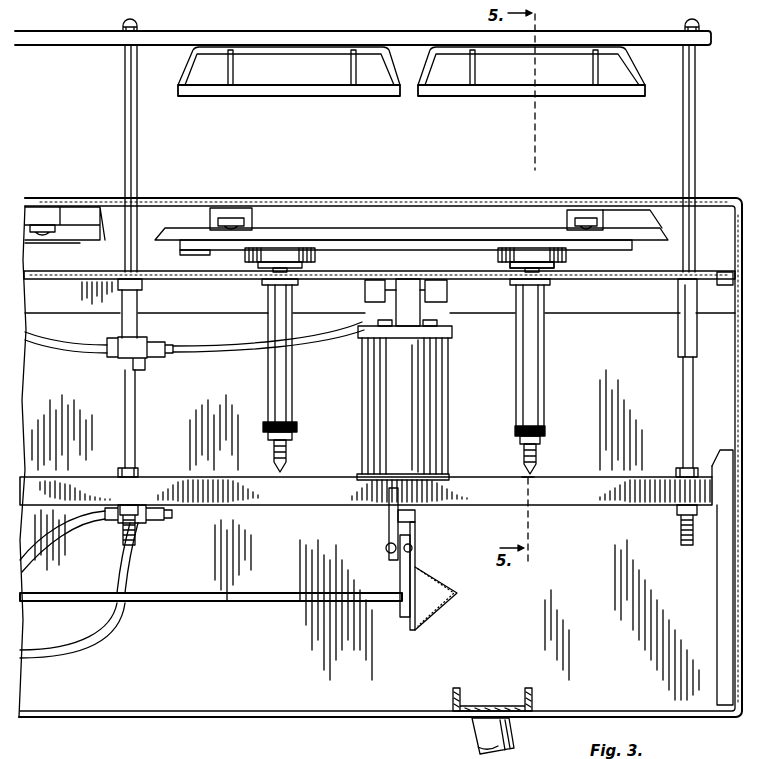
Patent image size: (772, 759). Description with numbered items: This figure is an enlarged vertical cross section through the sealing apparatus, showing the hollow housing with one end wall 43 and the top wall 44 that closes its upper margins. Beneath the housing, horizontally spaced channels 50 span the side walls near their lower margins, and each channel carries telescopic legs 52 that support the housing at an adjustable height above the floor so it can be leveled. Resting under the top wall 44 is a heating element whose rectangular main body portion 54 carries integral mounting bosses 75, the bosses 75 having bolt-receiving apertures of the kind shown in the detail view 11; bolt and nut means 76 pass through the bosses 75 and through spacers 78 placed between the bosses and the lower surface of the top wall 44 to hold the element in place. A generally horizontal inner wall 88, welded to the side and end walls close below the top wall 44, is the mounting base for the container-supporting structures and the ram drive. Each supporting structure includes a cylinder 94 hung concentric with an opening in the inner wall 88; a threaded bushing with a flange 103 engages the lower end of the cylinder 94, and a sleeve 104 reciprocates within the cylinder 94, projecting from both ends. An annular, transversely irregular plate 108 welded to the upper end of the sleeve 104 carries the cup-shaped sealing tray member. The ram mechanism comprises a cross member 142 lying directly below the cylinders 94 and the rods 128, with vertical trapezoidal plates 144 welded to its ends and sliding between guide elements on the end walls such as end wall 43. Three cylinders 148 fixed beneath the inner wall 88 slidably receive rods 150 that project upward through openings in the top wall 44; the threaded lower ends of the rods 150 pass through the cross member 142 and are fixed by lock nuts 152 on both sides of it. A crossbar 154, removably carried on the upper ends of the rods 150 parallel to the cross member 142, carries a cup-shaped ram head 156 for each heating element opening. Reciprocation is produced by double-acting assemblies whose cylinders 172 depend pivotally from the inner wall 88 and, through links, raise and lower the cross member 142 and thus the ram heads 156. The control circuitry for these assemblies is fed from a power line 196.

The bulkhead 11 is at (379, 269).
The end wall 43 is at (737, 400).
The top wall 44 is at (297, 200).
The channel 50 is at (489, 705).
The telescopic leg 52 is at (478, 734).
The main body portion 54 is at (366, 253).
The mounting boss 75 is at (604, 216).
The bolt and nut means 76 is at (231, 231).
The spacer 78 is at (599, 207).
The inner wall 88 is at (203, 282).
The cylinder 94 is at (270, 392).
The flange 103 is at (547, 430).
The sleeve 104 is at (540, 460).
The plate 108 is at (562, 264).
The rod 128 is at (525, 476).
The cross member 142 is at (553, 506).
The trapezoidal plate 144 is at (728, 515).
The cylinder 148 is at (139, 290).
The rod 150 is at (139, 148).
The lock nut 152 is at (137, 472).
The crossbar 154 is at (280, 37).
The ram head 156 is at (183, 61).
The cylinder 172 is at (425, 384).
The power line 196 is at (74, 748).